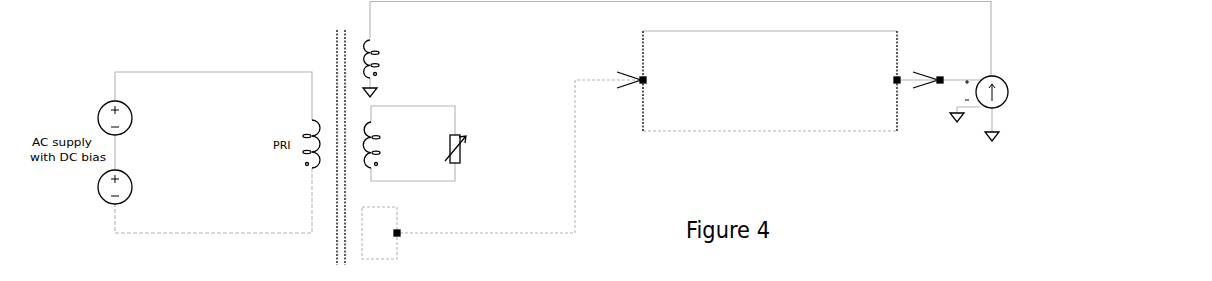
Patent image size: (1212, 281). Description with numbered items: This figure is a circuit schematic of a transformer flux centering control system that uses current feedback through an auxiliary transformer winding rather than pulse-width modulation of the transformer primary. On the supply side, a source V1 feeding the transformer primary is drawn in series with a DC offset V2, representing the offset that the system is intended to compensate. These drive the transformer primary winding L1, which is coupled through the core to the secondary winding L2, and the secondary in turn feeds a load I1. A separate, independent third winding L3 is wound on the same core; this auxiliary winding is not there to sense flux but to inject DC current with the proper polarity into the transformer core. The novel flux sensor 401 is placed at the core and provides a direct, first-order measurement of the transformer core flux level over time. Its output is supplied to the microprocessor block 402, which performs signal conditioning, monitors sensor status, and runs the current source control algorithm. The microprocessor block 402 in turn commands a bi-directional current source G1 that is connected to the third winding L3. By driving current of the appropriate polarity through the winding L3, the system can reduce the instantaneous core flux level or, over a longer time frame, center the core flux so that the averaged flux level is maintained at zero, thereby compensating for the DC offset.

The flux sensor 401 is at (436, 203).
The microprocessor block 402 is at (732, 32).
The AC line voltage source V1 is at (165, 114).
The DC offset source V2 is at (148, 183).
The primary winding L1 is at (318, 144).
The secondary winding L2 is at (378, 145).
The feedback winding L3 is at (431, 68).
The load I1 is at (476, 151).
The bi-directional current source G1 is at (1070, 104).